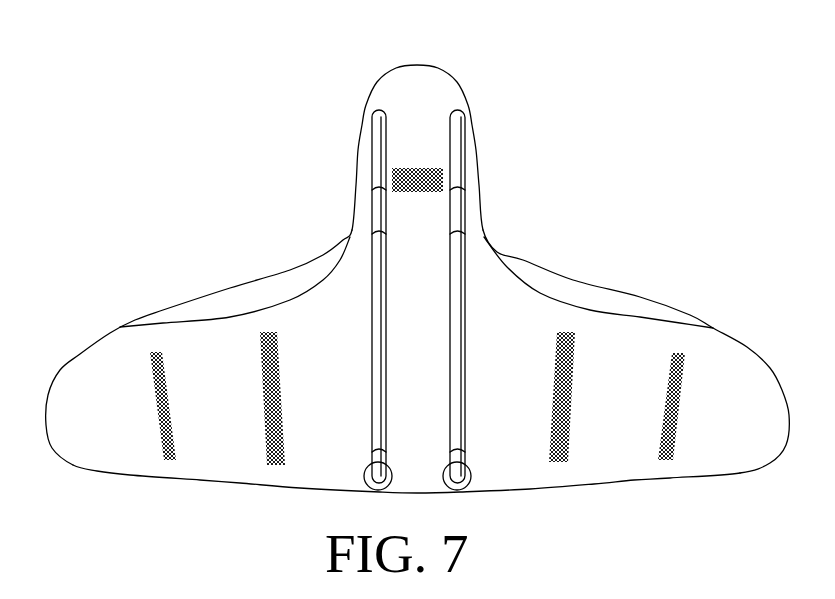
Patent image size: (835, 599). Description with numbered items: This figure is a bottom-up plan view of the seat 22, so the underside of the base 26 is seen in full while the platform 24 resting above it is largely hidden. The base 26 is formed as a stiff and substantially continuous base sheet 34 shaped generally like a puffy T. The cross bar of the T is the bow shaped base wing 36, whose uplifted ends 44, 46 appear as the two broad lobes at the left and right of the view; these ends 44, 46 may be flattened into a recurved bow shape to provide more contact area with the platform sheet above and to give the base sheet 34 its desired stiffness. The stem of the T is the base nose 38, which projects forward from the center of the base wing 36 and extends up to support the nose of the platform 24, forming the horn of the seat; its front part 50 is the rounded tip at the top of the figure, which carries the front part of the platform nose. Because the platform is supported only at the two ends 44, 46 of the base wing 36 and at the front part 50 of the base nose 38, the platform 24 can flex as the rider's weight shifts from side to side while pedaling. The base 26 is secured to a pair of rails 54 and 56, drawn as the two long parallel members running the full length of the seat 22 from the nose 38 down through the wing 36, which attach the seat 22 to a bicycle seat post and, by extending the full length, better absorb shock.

The seat 22 is at (655, 145).
The platform 24 is at (258, 290).
The base 26 is at (613, 468).
The base sheet 34 is at (677, 480).
The base wing 36 is at (217, 453).
The base nose 38 is at (470, 173).
The end of base wing 44 is at (770, 398).
The end of base wing 46 is at (63, 397).
The front part of base nose 50 is at (422, 82).
The rail 54 is at (373, 328).
The rail 56 is at (458, 328).